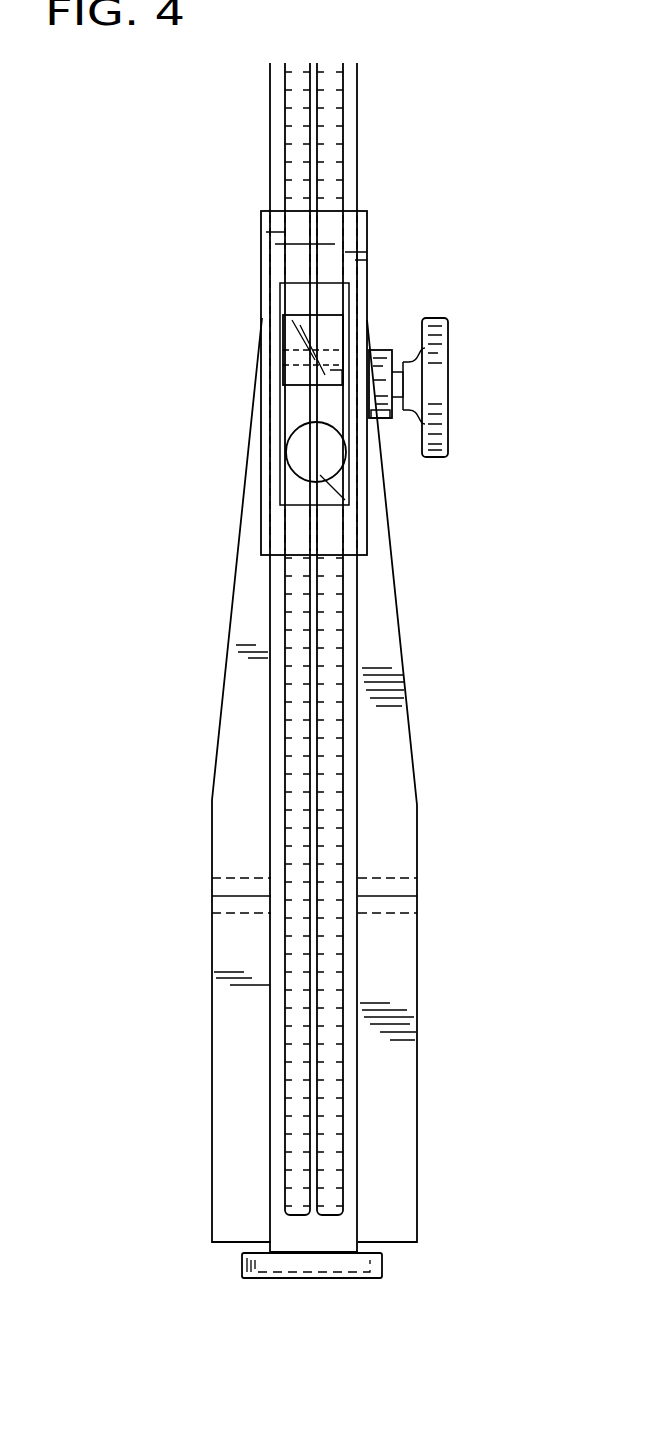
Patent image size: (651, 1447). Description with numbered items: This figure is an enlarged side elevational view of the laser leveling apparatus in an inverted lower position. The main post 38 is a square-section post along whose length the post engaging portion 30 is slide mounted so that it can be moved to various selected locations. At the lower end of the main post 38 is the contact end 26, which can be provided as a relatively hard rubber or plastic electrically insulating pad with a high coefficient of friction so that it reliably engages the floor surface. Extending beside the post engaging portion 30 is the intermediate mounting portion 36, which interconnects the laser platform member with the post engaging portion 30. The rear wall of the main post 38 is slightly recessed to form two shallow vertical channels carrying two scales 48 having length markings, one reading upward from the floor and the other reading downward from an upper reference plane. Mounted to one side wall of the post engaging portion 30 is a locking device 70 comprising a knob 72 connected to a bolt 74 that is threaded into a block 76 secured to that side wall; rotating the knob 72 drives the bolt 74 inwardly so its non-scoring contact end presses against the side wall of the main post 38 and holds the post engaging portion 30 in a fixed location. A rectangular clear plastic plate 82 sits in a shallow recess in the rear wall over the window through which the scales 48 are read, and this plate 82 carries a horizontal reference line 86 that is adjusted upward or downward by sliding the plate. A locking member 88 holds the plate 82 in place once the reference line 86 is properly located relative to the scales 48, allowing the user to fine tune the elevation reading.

The contact end 26 is at (373, 1268).
The post engaging portion 30 is at (367, 240).
The intermediate mounting portion 36 is at (402, 755).
The main post 38 is at (355, 655).
The scales 48 is at (285, 782).
The locking device 70 is at (428, 399).
The knob 72 is at (440, 370).
The bolt 74 is at (395, 425).
The block 76 is at (380, 420).
The clear plastic plate 82 is at (290, 322).
The horizontal reference line 86 is at (285, 338).
The locking member 88 is at (297, 452).